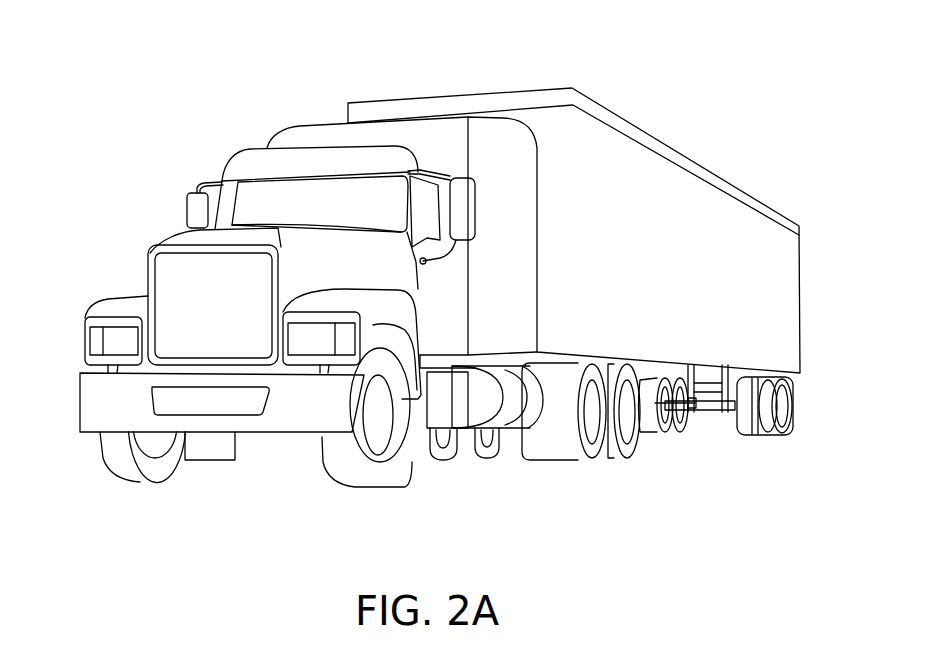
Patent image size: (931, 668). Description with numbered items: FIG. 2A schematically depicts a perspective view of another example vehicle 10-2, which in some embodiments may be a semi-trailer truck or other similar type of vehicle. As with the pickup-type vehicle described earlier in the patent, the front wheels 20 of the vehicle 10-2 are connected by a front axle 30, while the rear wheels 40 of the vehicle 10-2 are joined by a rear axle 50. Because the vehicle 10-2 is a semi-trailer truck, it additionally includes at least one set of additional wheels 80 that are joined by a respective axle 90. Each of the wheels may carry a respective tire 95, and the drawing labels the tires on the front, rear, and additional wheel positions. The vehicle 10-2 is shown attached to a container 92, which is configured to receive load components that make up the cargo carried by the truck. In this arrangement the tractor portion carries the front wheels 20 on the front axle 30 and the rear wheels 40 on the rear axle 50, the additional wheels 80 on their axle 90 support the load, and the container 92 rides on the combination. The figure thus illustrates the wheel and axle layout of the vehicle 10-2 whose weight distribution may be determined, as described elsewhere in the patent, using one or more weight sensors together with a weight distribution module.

The vehicle 10-2 is at (160, 83).
The front wheels 20 is at (103, 480).
The front axle 30 is at (382, 430).
The rear wheels 40 is at (627, 415).
The rear axle 50 is at (625, 468).
The additional wheels 80 is at (518, 468).
The axle 90 is at (593, 415).
The container 92 is at (705, 168).
The tire 95 is at (140, 485).